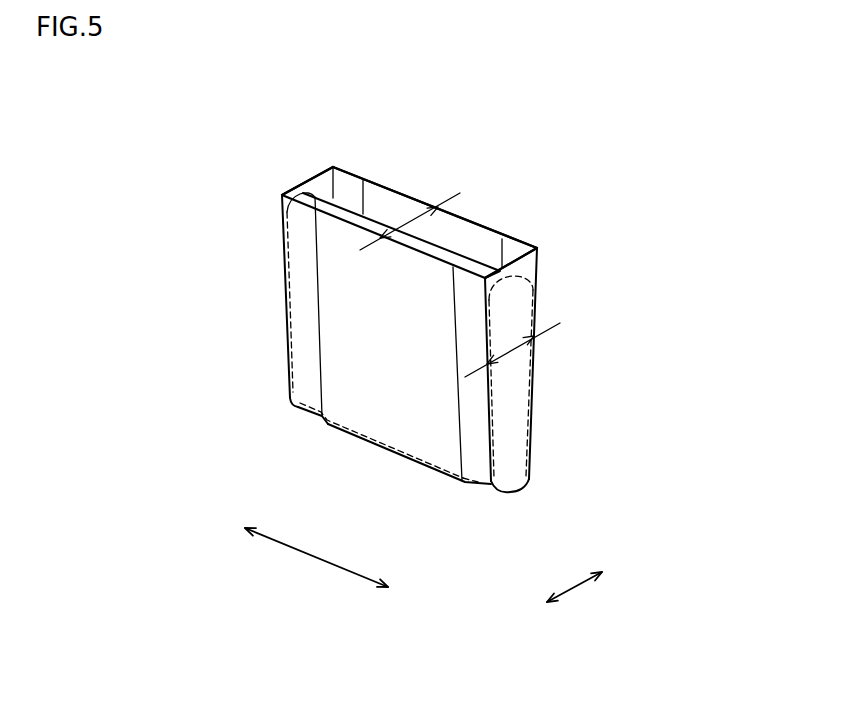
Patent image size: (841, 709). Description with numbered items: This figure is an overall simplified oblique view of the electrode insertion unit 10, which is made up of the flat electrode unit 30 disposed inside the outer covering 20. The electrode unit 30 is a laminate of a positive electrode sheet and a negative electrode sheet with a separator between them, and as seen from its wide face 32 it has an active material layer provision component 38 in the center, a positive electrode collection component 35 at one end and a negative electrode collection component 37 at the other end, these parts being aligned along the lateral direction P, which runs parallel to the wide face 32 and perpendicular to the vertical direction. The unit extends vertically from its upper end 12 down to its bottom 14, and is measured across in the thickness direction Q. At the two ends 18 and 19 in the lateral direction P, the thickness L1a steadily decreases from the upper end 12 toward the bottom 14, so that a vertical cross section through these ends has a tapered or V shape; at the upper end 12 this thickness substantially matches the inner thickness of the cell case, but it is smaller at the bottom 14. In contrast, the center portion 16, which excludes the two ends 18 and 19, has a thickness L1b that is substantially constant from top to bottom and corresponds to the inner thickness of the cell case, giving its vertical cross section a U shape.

The electrode insertion unit 10 is at (332, 140).
The upper end 12 is at (522, 241).
The bottom 14 is at (515, 488).
The center portion 16 is at (417, 448).
The end 18 is at (538, 272).
The end 19 is at (302, 183).
The outer covering 20 is at (362, 174).
The electrode unit 30 is at (457, 252).
The wide face 32 is at (346, 312).
The positive electrode collection component 35 is at (478, 465).
The negative electrode collection component 37 is at (305, 393).
The active material layer provision component 38 is at (363, 413).
The thickness at the two ends L1a is at (515, 350).
The thickness of the center portion L1b is at (410, 220).
The lateral direction P is at (302, 553).
The thickness direction Q is at (570, 592).